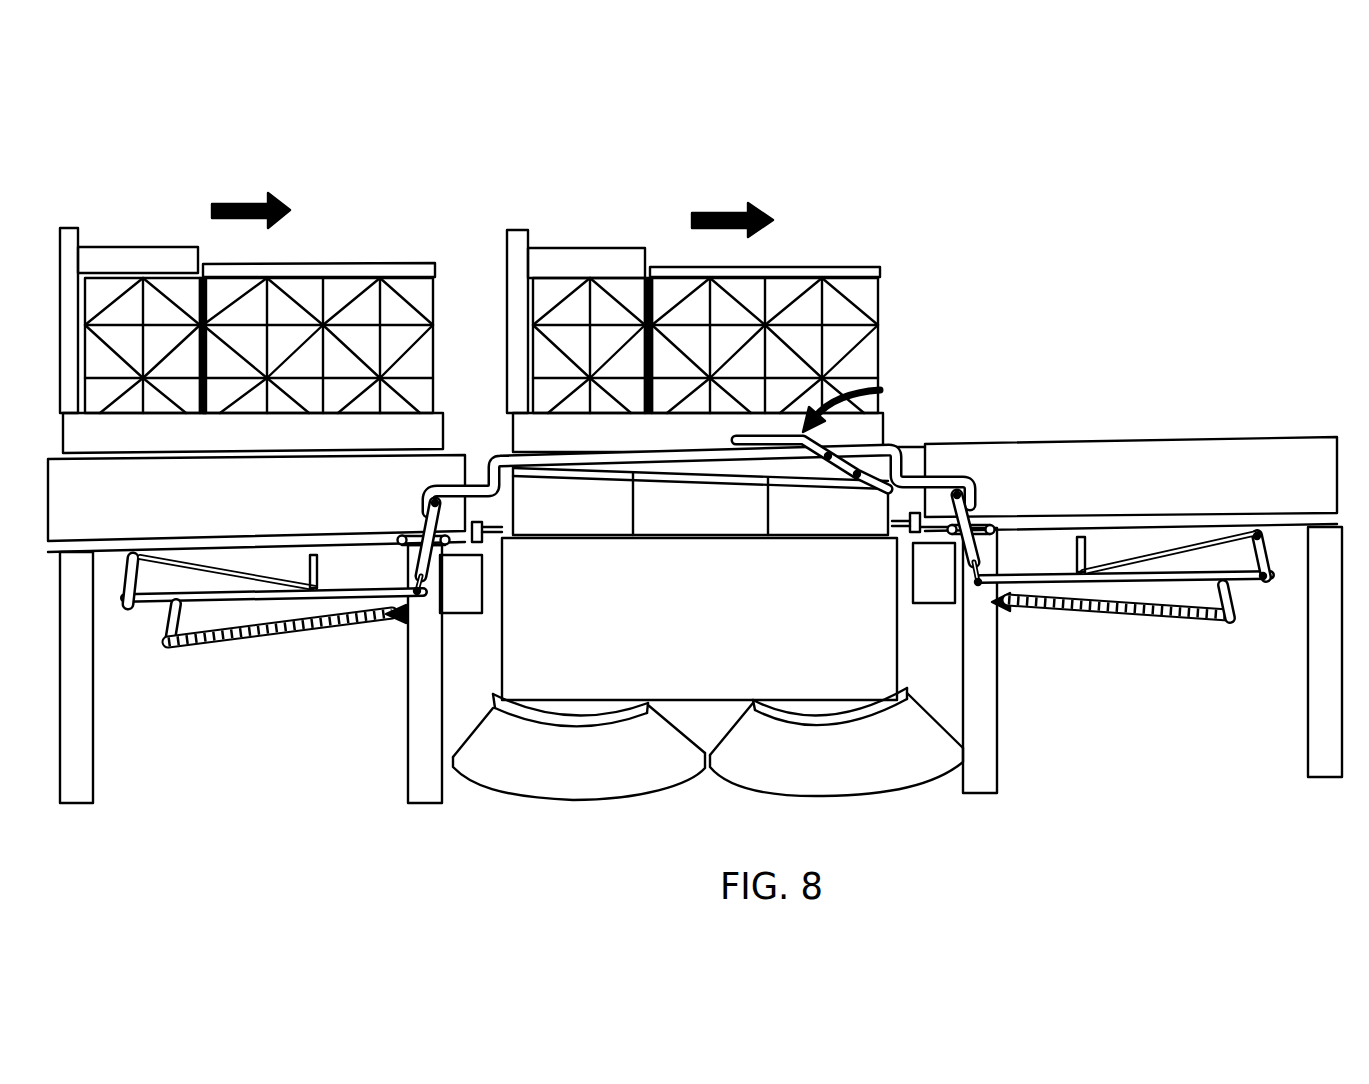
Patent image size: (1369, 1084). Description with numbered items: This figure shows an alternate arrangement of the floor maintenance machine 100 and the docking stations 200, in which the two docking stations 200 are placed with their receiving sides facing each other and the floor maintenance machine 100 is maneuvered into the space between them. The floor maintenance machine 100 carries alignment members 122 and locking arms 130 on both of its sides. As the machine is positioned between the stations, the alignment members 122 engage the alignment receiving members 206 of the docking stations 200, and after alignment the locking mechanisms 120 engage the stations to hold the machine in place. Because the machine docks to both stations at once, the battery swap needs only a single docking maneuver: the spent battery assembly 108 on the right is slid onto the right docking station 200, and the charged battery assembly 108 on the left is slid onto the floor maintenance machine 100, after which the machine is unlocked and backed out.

The floor maintenance machine 100 is at (708, 638).
The battery assembly 108 is at (321, 234).
The locking mechanism 120 is at (913, 408).
The alignment member 122 is at (482, 540).
The locking arm 130 is at (480, 493).
The docking station 200 is at (256, 516).
The alignment receiving member 206 is at (467, 553).